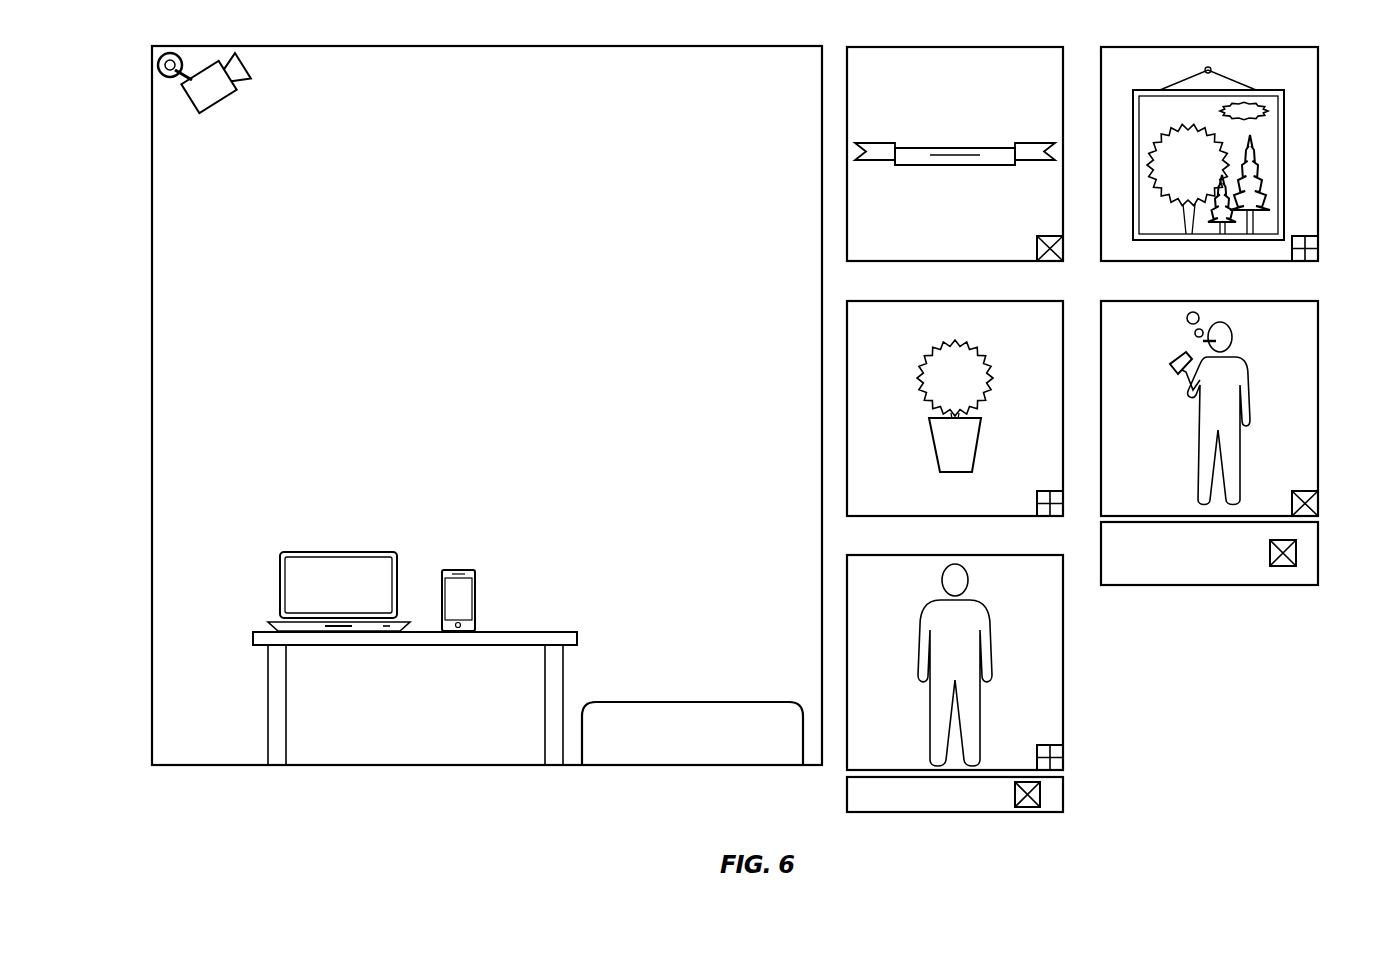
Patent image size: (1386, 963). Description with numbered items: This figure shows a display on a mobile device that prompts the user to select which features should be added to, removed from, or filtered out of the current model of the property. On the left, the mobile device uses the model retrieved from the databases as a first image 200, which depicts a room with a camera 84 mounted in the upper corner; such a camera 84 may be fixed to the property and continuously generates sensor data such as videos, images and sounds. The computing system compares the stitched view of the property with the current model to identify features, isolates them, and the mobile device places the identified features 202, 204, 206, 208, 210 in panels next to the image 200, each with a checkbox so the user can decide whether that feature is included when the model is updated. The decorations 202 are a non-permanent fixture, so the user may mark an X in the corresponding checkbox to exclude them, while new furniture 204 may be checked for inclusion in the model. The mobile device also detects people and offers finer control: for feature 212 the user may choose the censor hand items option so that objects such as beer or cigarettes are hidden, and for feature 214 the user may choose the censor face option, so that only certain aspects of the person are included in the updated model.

The camera 84 is at (222, 47).
The first image 200 is at (487, 47).
The decorations 202 is at (955, 47).
The new furniture 204 is at (1208, 47).
The identified feature 206 is at (955, 301).
The identified feature 208 is at (1208, 301).
The identified feature 210 is at (955, 555).
The feature 212 is at (1318, 550).
The feature 214 is at (1063, 790).